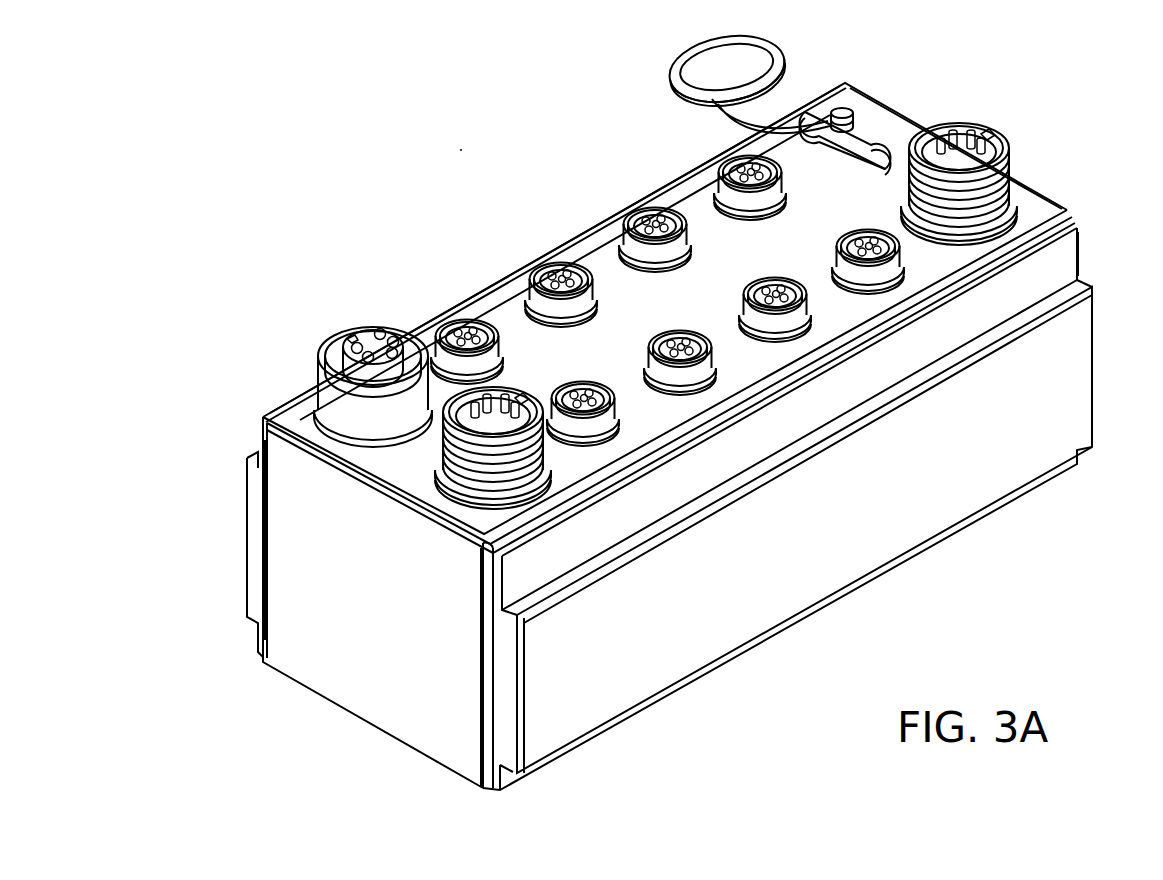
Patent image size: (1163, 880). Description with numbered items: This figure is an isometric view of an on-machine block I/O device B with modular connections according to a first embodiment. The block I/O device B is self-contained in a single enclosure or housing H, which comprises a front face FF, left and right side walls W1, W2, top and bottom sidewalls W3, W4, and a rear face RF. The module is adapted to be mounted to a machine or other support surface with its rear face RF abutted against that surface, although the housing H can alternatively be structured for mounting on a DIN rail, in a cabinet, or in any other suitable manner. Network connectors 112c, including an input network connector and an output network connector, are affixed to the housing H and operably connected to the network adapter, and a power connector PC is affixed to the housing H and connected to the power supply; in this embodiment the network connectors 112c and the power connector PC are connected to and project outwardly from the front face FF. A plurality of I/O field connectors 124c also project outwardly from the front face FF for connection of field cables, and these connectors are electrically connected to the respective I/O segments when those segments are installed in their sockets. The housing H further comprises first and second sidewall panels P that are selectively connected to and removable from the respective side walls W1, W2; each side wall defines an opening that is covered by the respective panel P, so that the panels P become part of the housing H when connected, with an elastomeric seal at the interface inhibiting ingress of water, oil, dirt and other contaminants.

The block I/O device B is at (546, 198).
The housing H is at (335, 683).
The sidewall panel P is at (246, 510).
The rear face RF is at (447, 771).
The front face FF is at (701, 190).
The left side wall W1 is at (1046, 222).
The right side wall W2 is at (621, 209).
The top sidewall W3 is at (907, 126).
The bottom sidewall W4 is at (410, 722).
The power connector PC is at (997, 131).
The network connector 112c is at (330, 400).
The I/O field connector 124c is at (530, 273).